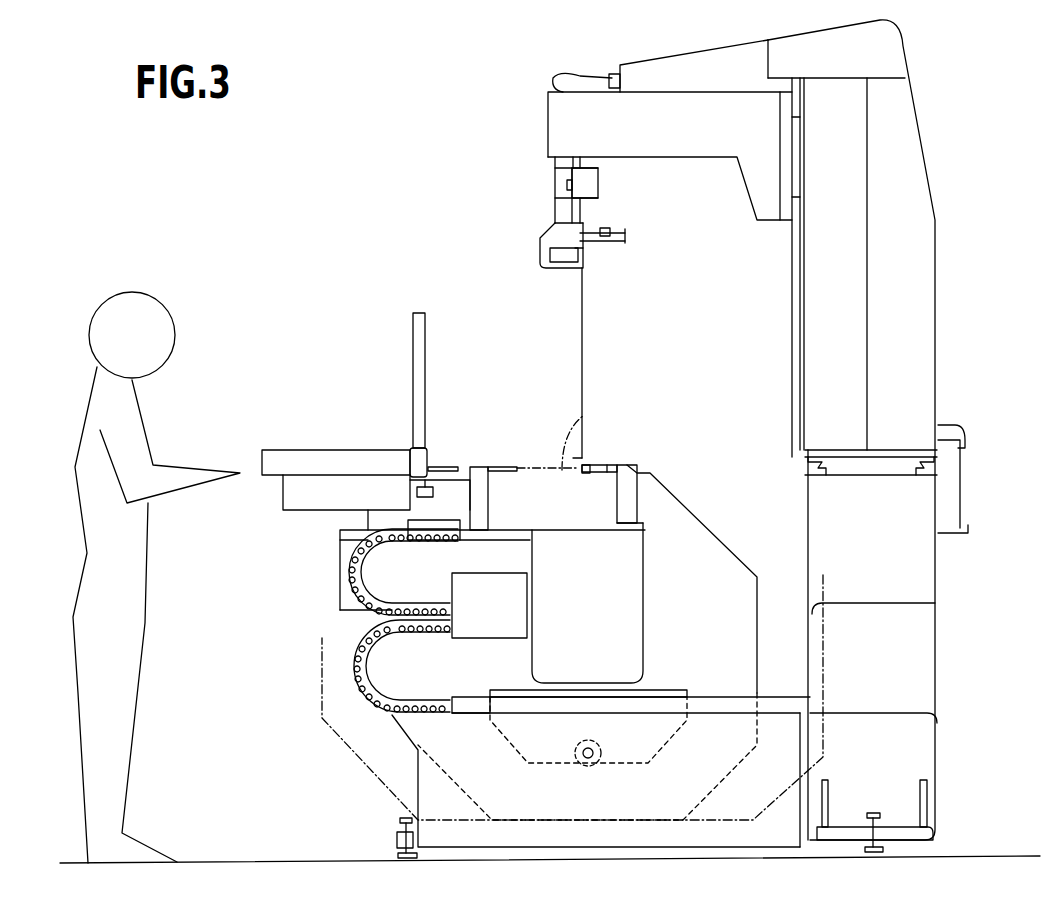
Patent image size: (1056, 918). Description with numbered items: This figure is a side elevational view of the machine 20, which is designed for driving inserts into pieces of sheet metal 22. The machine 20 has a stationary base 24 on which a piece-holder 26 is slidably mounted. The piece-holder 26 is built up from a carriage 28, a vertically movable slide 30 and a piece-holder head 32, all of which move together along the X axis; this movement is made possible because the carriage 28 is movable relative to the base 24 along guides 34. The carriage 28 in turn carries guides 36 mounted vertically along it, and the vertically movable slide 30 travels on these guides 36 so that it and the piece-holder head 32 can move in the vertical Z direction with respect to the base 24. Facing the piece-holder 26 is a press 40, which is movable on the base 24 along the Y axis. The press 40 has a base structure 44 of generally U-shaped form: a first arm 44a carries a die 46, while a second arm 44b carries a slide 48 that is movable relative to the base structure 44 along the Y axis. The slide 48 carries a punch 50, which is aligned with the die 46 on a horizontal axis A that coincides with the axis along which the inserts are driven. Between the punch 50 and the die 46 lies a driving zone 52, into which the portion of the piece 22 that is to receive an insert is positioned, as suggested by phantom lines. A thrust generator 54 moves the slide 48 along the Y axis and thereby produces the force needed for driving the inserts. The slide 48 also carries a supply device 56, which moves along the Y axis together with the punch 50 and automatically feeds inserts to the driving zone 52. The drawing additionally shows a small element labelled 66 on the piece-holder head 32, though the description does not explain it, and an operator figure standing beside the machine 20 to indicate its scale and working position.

The machine 20 is at (380, 296).
The piece of sheet metal 22 is at (574, 356).
The stationary base 24 is at (915, 635).
The piece-holder 26 is at (930, 66).
The carriage 28 is at (908, 180).
The vertically movable slide 30 is at (657, 106).
The piece-holder head 32 is at (522, 222).
The guides 34 is at (822, 458).
The guides 36 is at (790, 250).
The press 40 is at (285, 603).
The base structure 44 is at (380, 672).
The first arm 44a is at (710, 590).
The second arm 44b is at (507, 665).
The die 46 is at (607, 474).
The slide 48 is at (480, 510).
The punch 50 is at (505, 465).
The driving zone 52 is at (528, 450).
The thrust generator 54 is at (348, 563).
The supply device 56 is at (355, 425).
The tool 66 is at (580, 212).
The horizontal axis A is at (592, 413).